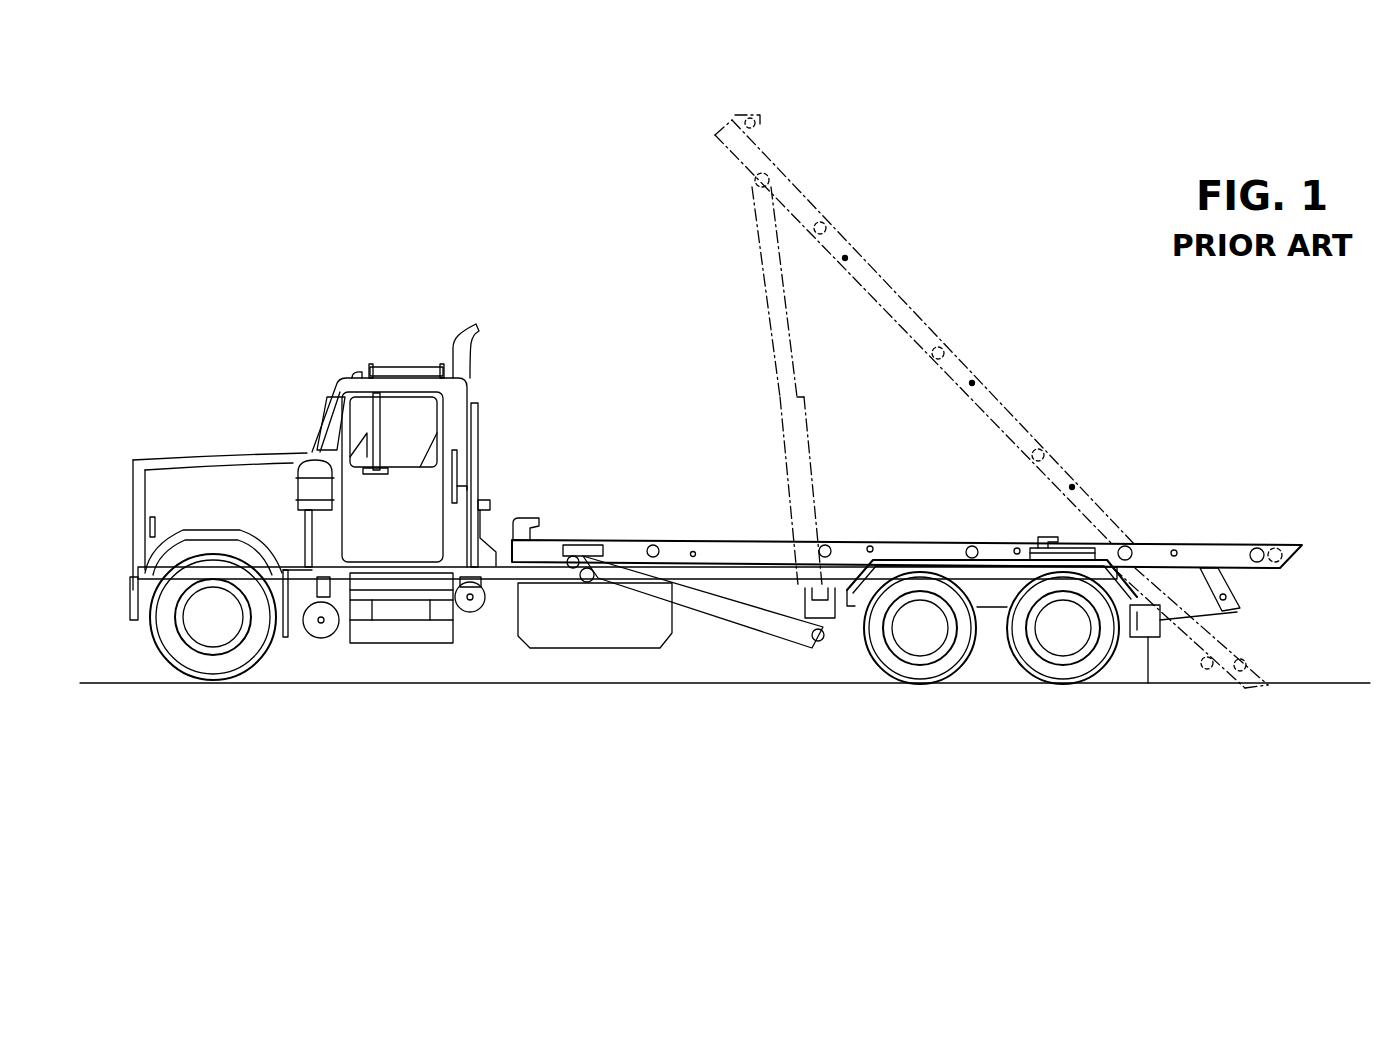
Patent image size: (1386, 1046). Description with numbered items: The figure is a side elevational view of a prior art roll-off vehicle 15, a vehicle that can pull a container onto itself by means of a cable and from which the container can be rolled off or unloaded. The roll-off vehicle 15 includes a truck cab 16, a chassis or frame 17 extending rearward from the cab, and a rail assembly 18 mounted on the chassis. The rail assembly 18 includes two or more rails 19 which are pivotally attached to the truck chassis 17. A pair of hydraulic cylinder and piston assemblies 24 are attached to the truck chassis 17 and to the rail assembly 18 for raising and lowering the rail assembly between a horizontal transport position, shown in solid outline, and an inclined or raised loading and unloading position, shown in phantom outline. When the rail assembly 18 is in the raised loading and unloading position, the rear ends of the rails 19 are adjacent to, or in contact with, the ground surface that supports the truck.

The roll-off vehicle 15 is at (548, 712).
The truck cab 16 is at (462, 398).
The chassis 17 is at (502, 593).
The rail assembly 18 is at (890, 275).
The rails 19 is at (1032, 433).
The hydraulic cylinder and piston assemblies 24 is at (778, 470).